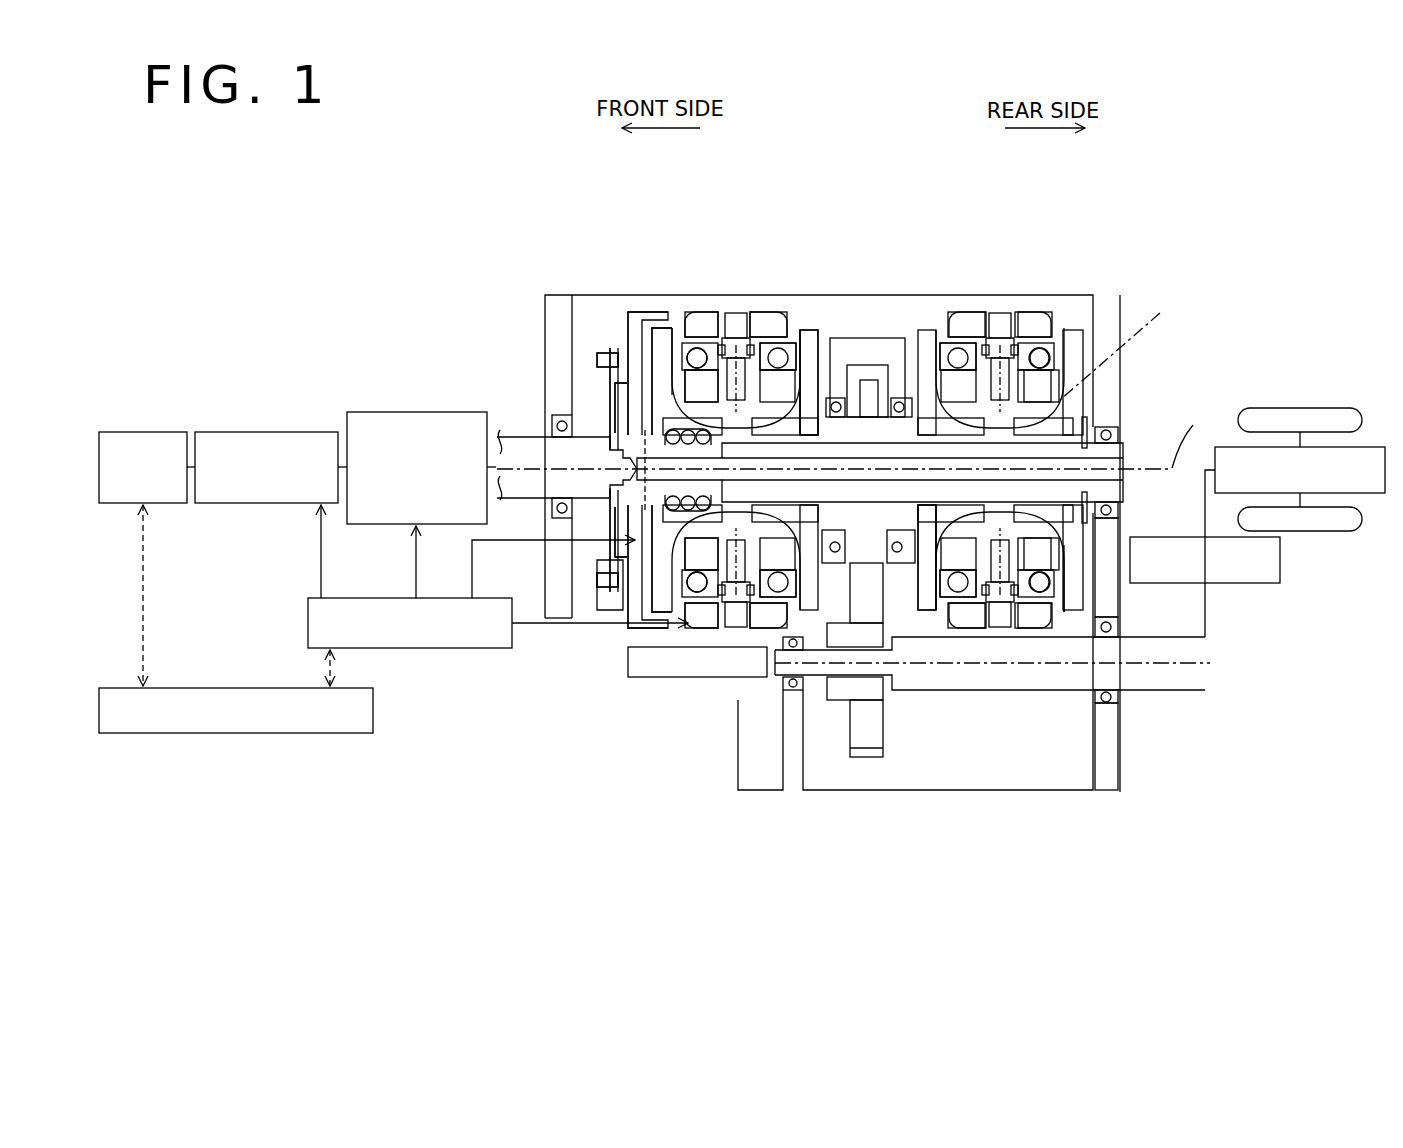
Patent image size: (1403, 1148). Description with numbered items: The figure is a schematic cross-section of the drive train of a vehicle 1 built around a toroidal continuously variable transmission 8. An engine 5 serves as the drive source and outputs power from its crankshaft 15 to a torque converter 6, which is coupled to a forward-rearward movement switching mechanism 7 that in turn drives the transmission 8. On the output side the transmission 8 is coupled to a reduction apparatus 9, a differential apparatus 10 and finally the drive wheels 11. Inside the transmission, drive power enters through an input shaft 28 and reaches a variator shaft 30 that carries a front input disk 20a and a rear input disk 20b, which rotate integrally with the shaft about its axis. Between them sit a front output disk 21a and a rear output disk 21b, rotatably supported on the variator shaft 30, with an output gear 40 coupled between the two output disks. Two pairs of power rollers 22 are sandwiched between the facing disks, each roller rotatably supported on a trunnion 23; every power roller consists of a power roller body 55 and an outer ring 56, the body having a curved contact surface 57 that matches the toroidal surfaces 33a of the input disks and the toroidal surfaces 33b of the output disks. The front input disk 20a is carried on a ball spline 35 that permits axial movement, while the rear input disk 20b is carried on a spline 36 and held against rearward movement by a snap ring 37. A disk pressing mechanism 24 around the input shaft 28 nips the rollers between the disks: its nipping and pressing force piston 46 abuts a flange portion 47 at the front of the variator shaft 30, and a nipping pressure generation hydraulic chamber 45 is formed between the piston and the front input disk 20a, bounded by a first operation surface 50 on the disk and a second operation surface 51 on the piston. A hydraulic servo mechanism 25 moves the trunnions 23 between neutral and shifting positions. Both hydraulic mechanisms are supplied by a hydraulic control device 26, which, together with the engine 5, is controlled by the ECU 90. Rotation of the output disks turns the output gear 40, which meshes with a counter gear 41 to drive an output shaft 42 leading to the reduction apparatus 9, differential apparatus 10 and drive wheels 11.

The vehicle 1 is at (896, 150).
The engine 5 is at (147, 432).
The torque converter 6 is at (269, 432).
The forward-rearward movement switching mechanism 7 is at (419, 412).
The toroidal continuously variable transmission 8 is at (897, 293).
The reduction apparatus 9 is at (1157, 537).
The differential apparatus 10 is at (1370, 447).
The drive wheels 11 is at (1302, 408).
The crankshaft 15 is at (193, 503).
The front input disk 20a is at (655, 325).
The rear input disk 20b is at (1072, 562).
The front output disk 21a is at (812, 335).
The rear output disk 21b is at (926, 580).
The power rollers 22 is at (745, 186).
The trunnion 23 is at (773, 340).
The disk pressing mechanism 24 is at (640, 316).
The hydraulic servo mechanism 25 is at (695, 308).
The hydraulic control device 26 is at (496, 598).
The input shaft 28 is at (509, 437).
The variator shaft 30 is at (1112, 452).
The toroidal surfaces 33a is at (668, 420).
The toroidal surfaces 33b is at (802, 345).
The ball spline 35 is at (611, 348).
The spline 36 is at (1090, 428).
The snap ring 37 is at (1088, 448).
The output gear 40 is at (868, 355).
The counter gear 41 is at (860, 730).
The output shaft 42 is at (1138, 690).
The nipping pressure generation hydraulic chamber 45 is at (623, 336).
The nipping and pressing force piston 46 is at (608, 362).
The flange portion 47 is at (617, 410).
The first operation surface 50 is at (650, 588).
The second operation surface 51 is at (620, 570).
The power roller body 55 is at (712, 395).
The outer ring 56 is at (719, 345).
The curved contact surface 57 is at (768, 335).
The ECU 90 is at (240, 688).